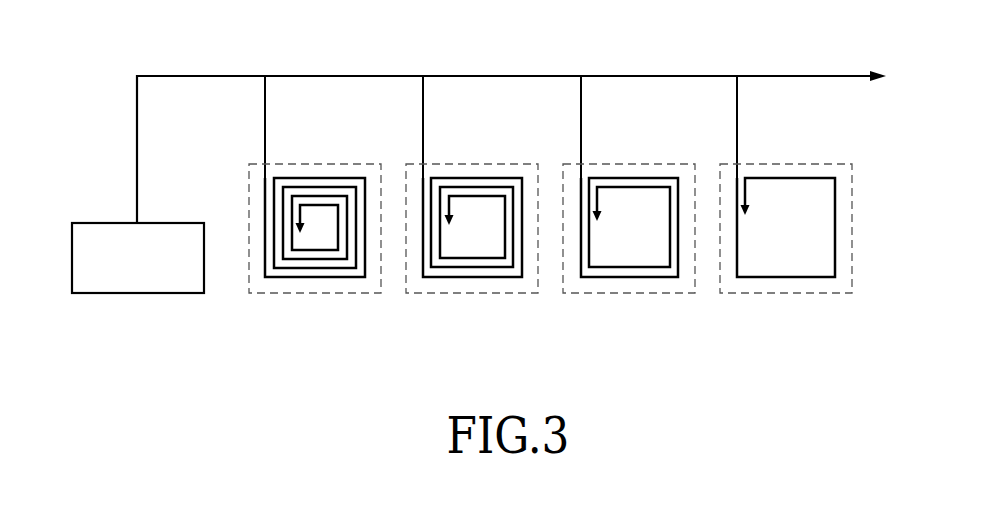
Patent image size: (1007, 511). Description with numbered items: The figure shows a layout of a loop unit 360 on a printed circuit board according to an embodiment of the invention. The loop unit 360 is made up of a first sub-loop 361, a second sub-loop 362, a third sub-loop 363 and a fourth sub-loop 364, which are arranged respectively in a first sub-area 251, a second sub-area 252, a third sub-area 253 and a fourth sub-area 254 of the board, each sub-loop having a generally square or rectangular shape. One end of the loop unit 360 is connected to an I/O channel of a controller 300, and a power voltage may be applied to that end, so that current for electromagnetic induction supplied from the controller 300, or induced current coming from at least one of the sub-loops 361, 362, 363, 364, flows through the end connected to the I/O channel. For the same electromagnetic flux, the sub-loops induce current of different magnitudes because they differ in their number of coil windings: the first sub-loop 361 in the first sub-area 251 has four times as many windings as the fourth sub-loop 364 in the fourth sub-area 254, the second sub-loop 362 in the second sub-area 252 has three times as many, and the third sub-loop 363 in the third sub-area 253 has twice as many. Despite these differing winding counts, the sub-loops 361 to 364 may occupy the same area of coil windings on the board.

The controller 300 is at (166, 222).
The loop unit 360 is at (189, 75).
The first sub-area 251 is at (313, 163).
The second sub-area 252 is at (470, 163).
The third sub-area 253 is at (626, 163).
The fourth sub-area 254 is at (784, 163).
The first sub-loop 361 is at (321, 278).
The second sub-loop 362 is at (476, 278).
The third sub-loop 363 is at (633, 278).
The fourth sub-loop 364 is at (790, 278).